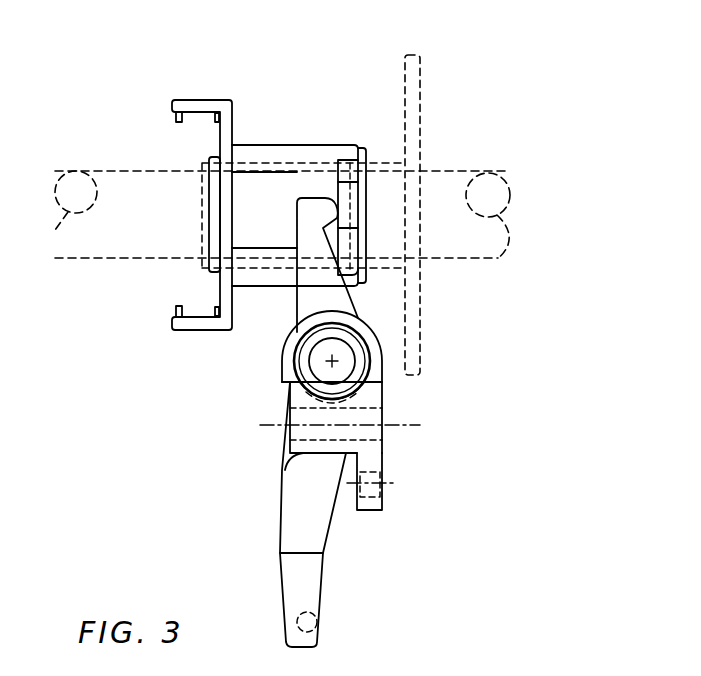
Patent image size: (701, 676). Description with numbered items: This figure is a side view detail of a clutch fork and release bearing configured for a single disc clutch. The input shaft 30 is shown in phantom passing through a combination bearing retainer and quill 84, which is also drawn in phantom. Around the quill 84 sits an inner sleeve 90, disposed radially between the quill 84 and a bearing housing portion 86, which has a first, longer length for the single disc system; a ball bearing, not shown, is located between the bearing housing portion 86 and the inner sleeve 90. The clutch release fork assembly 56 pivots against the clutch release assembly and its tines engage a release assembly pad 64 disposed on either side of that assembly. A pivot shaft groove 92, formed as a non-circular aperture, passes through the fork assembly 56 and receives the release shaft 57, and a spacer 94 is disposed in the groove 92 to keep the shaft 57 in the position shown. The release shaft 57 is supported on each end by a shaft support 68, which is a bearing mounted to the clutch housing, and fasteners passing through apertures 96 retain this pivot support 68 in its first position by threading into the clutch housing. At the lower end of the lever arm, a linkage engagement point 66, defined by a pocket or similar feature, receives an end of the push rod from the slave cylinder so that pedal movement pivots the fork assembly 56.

The input shaft 30 is at (112, 259).
The clutch release fork assembly 56 is at (283, 503).
The release shaft 57 is at (282, 382).
The release assembly pad 64 is at (337, 196).
The linkage engagement point 66 is at (317, 622).
The shaft support 68 is at (284, 468).
The combination bearing retainer and quill 84 is at (387, 163).
The bearing housing portion 86 is at (260, 144).
The inner sleeve 90 is at (210, 157).
The pivot shaft groove 92 is at (292, 400).
The spacer 94 is at (383, 383).
The apertures 96 is at (385, 478).